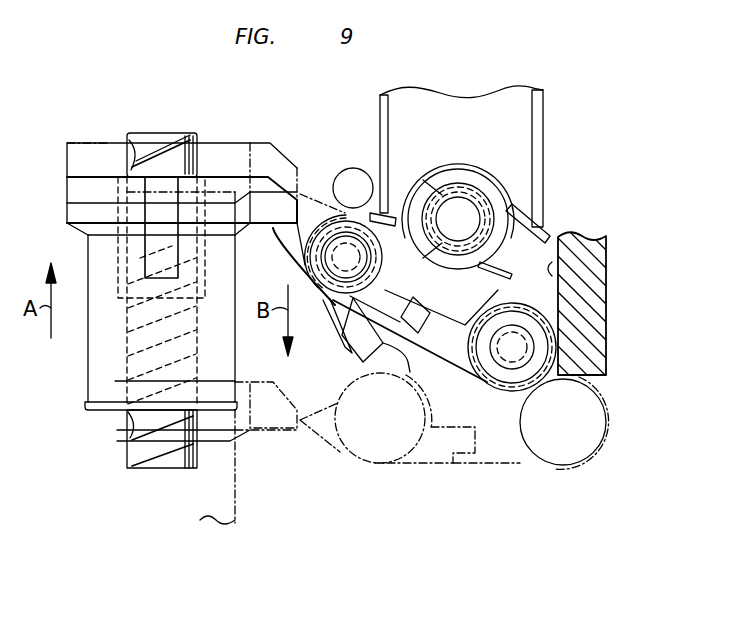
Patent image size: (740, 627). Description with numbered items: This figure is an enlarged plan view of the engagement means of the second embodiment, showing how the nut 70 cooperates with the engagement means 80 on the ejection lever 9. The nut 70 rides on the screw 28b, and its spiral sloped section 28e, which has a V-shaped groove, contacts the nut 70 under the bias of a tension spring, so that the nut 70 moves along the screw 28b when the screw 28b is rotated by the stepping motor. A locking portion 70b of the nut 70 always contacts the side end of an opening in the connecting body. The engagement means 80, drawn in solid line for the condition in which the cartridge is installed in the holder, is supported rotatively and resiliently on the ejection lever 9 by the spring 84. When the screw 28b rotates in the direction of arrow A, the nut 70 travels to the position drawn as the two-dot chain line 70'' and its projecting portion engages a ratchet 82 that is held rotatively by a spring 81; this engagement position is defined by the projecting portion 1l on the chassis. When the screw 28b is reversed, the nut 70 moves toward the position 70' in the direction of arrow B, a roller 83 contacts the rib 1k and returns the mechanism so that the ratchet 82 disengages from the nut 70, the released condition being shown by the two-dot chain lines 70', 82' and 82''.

The nut 70 is at (168, 261).
The locking portion 70b is at (157, 258).
The two-dot chain line position of nut 70' is at (266, 433).
The two-dot chain line position of nut 70'' is at (174, 302).
The spiral sloped section 28e is at (128, 434).
The screw 28b is at (127, 456).
The ratchet 82 is at (371, 298).
The two-dot chain line position of ratchet 82' is at (454, 436).
The two-dot chain line position of ratchet 82'' is at (348, 187).
The projecting portion 1l is at (353, 168).
The spring 81 is at (394, 222).
The ejection lever 9 is at (518, 118).
The spring 84 is at (547, 228).
The rib 1k is at (552, 265).
The roller 83 is at (545, 308).
The engagement means 80 is at (458, 355).